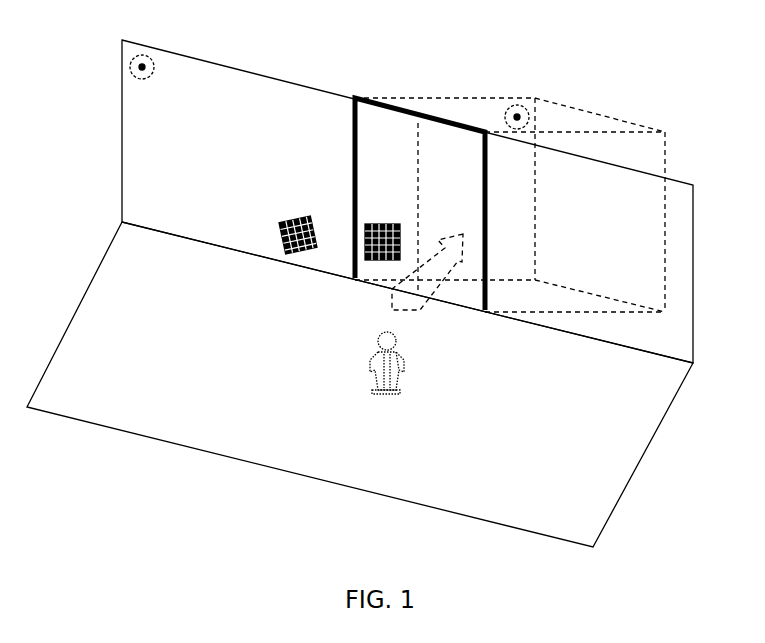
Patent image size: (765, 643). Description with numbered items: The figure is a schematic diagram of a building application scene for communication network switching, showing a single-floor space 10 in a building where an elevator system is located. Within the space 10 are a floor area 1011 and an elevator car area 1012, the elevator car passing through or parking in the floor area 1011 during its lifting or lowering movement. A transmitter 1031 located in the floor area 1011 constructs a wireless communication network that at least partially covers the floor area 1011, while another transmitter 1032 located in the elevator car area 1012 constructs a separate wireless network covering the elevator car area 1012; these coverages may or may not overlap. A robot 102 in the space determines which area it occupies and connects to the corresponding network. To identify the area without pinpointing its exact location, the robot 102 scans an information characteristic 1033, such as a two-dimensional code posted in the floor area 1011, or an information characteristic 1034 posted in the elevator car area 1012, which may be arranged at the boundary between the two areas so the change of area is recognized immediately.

The single-floor space 10 is at (433, 50).
The floor area 1011 is at (245, 96).
The elevator car area 1012 is at (645, 145).
The transmitter 1031 is at (151, 84).
The transmitter 1032 is at (521, 100).
The information characteristic 1033 is at (309, 214).
The information characteristic 1034 is at (389, 219).
The robot 102 is at (424, 361).